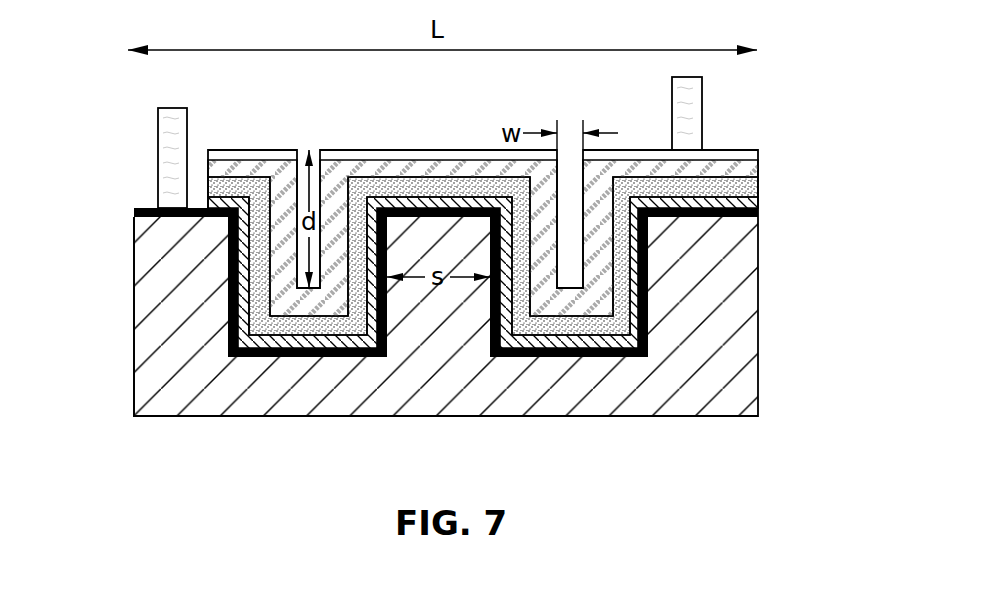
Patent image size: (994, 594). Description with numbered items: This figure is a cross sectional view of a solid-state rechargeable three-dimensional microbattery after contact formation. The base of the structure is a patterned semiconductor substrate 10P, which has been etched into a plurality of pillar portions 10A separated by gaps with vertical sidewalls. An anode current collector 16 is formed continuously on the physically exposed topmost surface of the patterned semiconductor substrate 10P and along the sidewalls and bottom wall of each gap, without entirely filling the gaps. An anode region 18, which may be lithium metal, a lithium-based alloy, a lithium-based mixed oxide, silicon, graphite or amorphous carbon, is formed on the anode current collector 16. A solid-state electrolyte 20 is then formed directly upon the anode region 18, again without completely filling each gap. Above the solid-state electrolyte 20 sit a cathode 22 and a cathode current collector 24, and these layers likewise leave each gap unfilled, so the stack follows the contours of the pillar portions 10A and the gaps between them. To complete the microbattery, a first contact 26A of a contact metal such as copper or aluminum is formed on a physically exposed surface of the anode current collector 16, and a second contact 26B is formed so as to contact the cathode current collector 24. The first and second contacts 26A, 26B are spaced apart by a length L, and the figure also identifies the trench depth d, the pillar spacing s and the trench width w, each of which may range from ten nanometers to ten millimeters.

The pillar portions 10A is at (203, 314).
The patterned semiconductor substrate 10P is at (128, 218).
The anode current collector 16 is at (753, 215).
The anode region 18 is at (753, 203).
The solid-state electrolyte 20 is at (753, 183).
The cathode 22 is at (753, 168).
The cathode current collector 24 is at (753, 155).
The first contact 26A is at (167, 140).
The second contact 26B is at (693, 117).